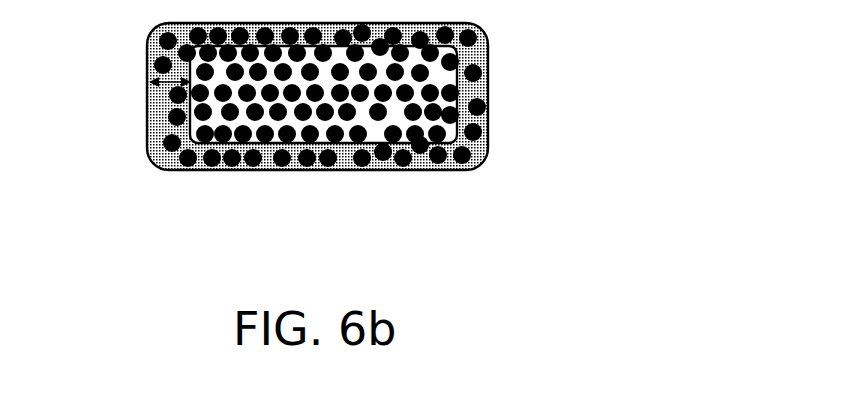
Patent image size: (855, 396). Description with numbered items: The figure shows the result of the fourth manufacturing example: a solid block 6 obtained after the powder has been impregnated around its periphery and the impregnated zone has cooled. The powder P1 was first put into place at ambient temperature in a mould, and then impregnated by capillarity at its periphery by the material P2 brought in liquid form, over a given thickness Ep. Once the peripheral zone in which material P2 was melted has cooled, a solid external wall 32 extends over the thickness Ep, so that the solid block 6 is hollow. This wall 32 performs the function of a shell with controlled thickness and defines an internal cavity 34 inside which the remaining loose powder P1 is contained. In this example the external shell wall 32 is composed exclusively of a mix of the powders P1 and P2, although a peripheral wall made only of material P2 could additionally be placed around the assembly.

The solid block 6 is at (316, 150).
The external wall 32 is at (150, 161).
The internal cavity 34 is at (417, 48).
The powder P1 is at (420, 160).
The material P2 is at (477, 93).
The thickness Ep is at (165, 82).